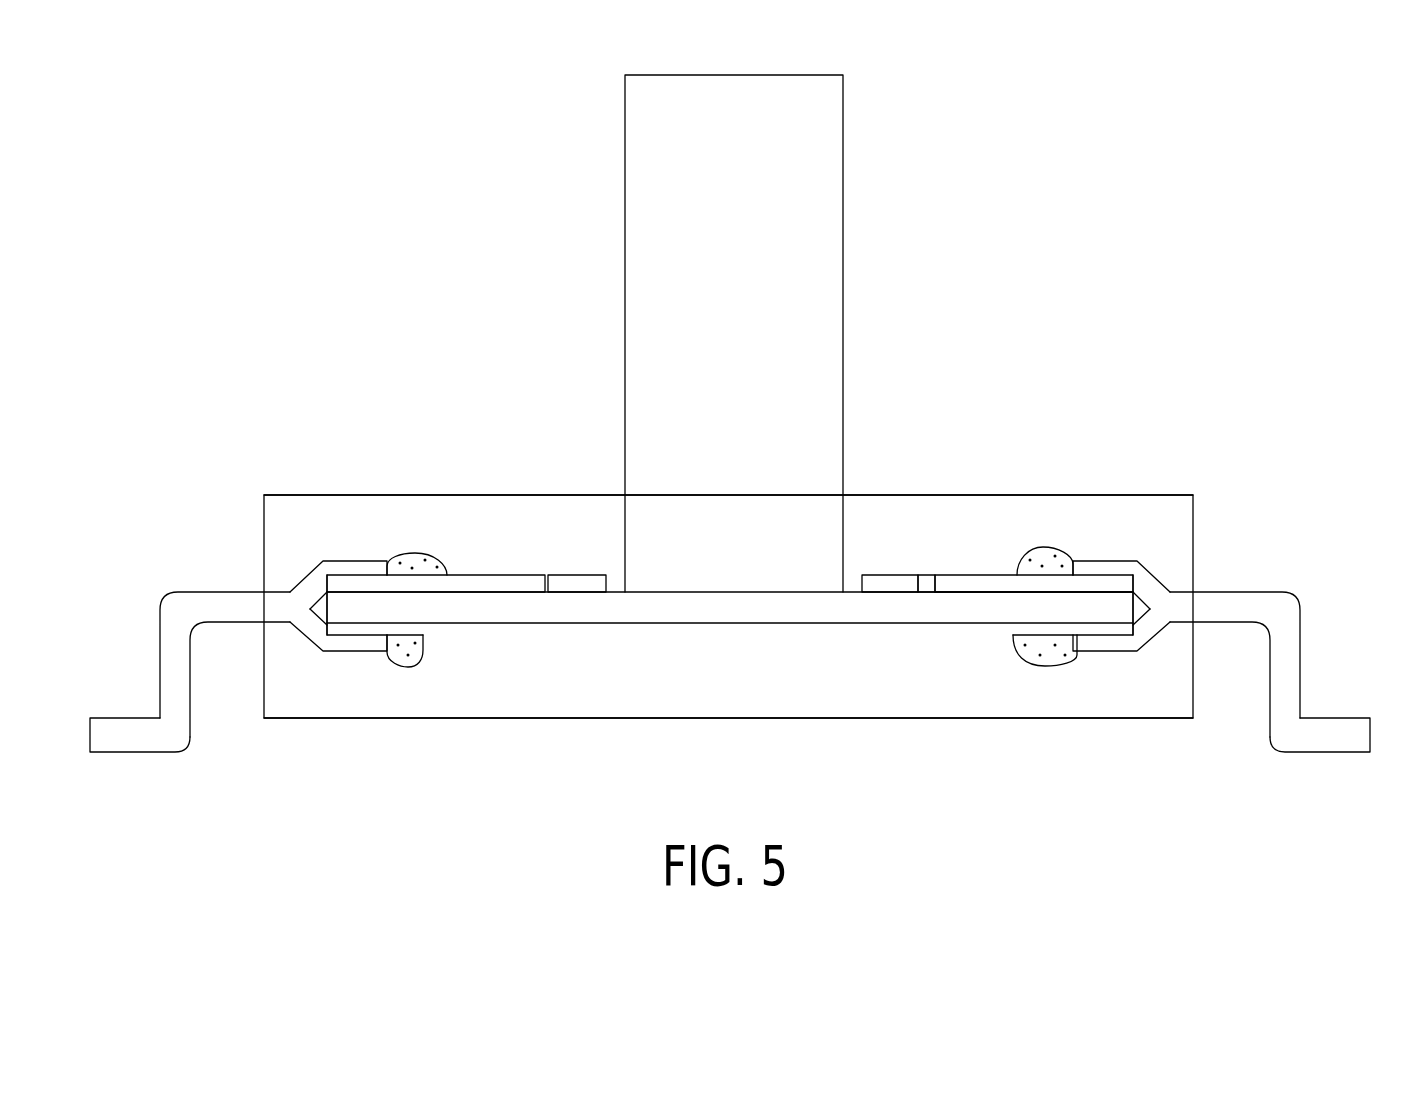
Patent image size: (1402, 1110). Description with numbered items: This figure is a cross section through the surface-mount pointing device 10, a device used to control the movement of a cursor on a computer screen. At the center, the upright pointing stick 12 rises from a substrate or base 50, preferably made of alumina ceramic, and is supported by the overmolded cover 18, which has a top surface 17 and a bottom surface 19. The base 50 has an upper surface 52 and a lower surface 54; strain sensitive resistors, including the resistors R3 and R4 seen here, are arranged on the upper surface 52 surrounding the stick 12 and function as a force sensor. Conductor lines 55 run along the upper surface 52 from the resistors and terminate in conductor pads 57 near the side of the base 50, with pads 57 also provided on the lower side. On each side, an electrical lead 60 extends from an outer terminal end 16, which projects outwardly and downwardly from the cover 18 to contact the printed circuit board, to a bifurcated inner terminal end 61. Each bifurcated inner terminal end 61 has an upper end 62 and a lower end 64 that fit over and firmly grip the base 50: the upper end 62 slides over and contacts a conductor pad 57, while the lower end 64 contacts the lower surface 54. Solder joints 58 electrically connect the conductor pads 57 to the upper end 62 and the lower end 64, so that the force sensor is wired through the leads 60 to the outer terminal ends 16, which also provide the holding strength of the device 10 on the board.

The surface-mount pointing device 10 is at (289, 255).
The pointing stick 12 is at (616, 389).
The outer terminal ends 16 is at (120, 753).
The top surface 17 is at (533, 495).
The overmolded cover 18 is at (310, 487).
The bottom surface 19 is at (367, 720).
The base 50 is at (530, 630).
The upper surface 52 is at (935, 575).
The lower surface 54 is at (453, 625).
The conductive layer 55 is at (970, 583).
The conductor pad 57 is at (1015, 577).
The solder joints 58 is at (412, 557).
The electrical lead 60 is at (197, 584).
The bifurcated inner terminal end 61 is at (308, 655).
The upper ends 62 is at (343, 563).
The lower end 64 is at (350, 651).
The strain sensitive resistor R3 is at (883, 590).
The strain sensitive resistor R4 is at (587, 588).